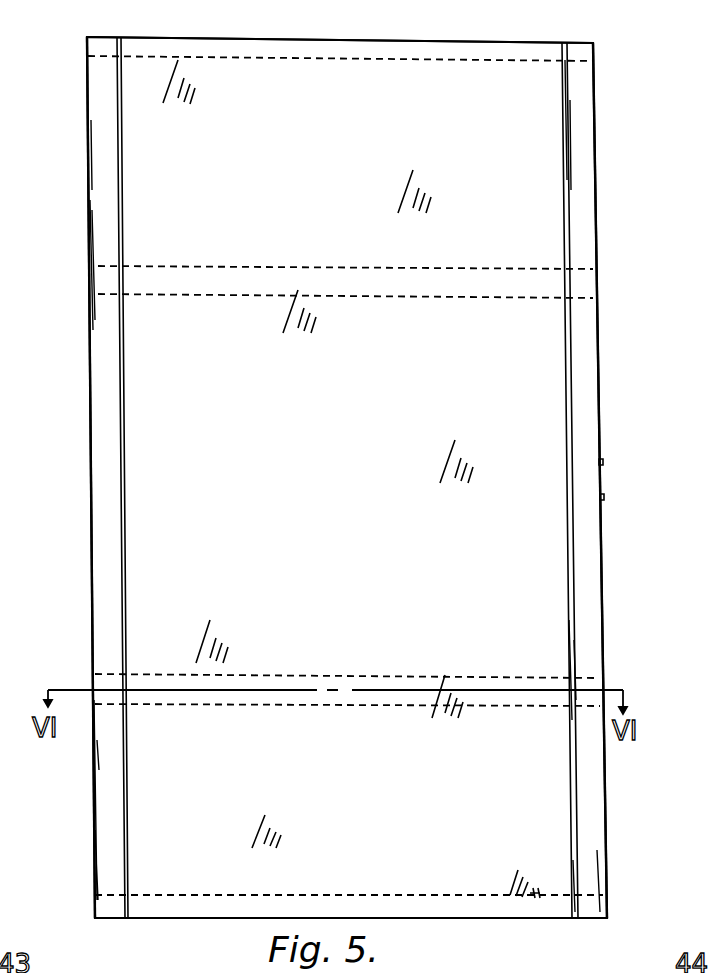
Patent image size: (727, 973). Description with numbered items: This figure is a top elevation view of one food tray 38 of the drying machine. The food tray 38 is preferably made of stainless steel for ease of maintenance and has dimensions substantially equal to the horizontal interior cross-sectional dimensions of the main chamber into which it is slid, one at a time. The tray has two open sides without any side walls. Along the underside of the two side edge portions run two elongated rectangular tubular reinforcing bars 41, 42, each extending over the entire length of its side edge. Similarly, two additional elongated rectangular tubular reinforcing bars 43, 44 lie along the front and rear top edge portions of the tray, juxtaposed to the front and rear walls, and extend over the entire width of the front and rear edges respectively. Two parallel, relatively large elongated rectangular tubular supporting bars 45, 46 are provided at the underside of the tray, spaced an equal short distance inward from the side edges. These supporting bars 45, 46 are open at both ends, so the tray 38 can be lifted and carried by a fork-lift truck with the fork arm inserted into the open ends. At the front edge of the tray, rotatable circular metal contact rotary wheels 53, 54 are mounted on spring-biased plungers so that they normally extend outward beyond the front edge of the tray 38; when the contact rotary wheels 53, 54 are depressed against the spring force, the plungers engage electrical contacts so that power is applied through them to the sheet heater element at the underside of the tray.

The food tray 38 is at (545, 183).
The rectangular tubular reinforcing bar 41 is at (88, 47).
The rectangular tubular reinforcing bar 42 is at (559, 912).
The rectangular tubular reinforcing bar 43 is at (100, 193).
The rectangular tubular reinforcing bar 44 is at (583, 97).
The rectangular tubular supporting bar 45 is at (597, 686).
The rectangular tubular supporting bar 46 is at (595, 286).
The contact rotary wheel 53 is at (603, 497).
The contact rotary wheel 54 is at (603, 462).